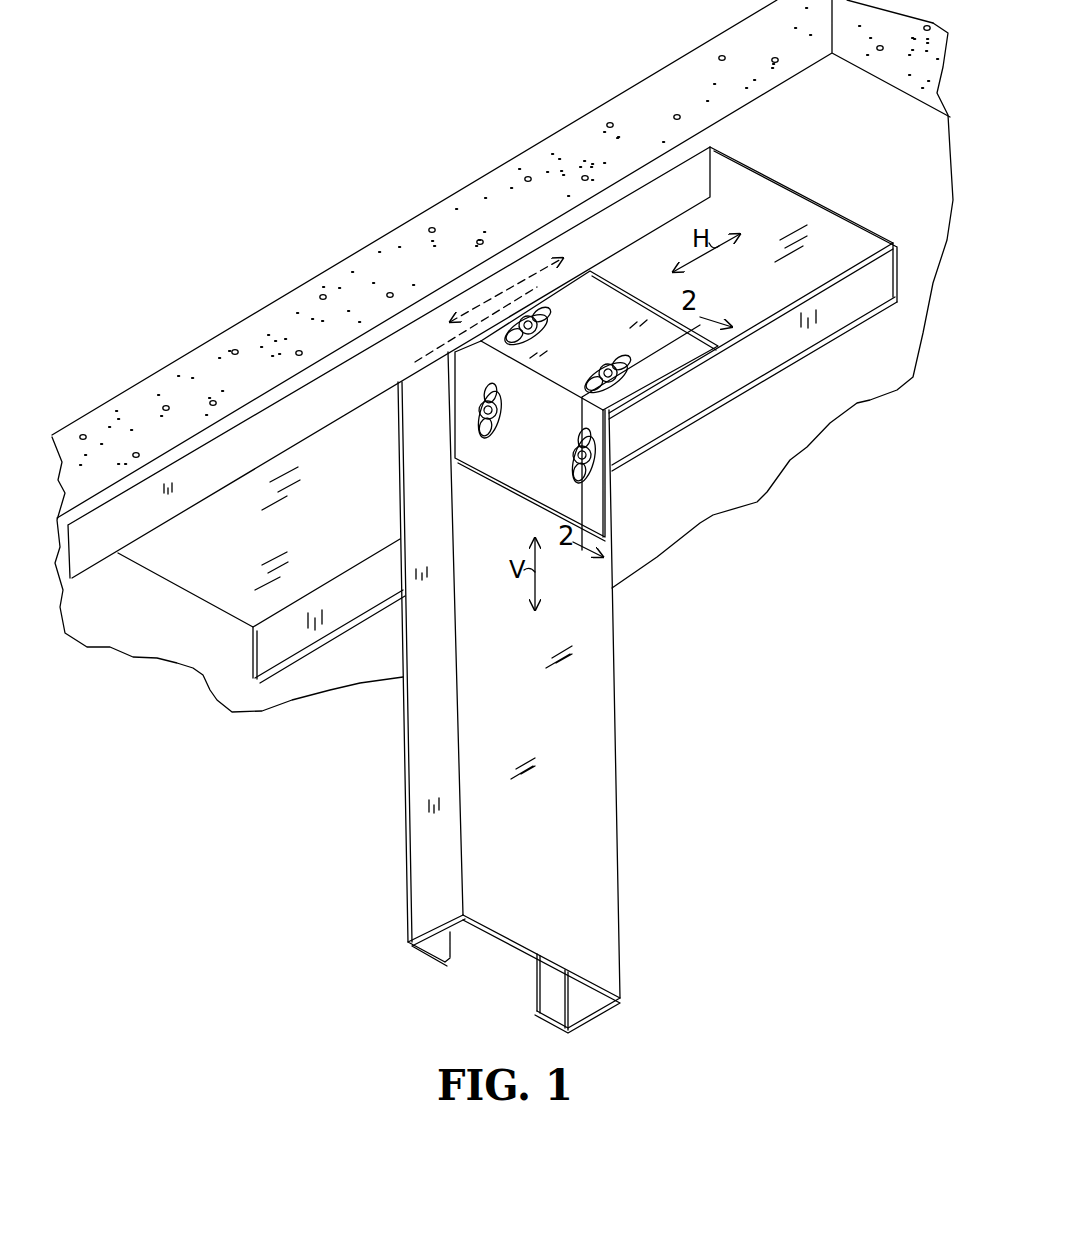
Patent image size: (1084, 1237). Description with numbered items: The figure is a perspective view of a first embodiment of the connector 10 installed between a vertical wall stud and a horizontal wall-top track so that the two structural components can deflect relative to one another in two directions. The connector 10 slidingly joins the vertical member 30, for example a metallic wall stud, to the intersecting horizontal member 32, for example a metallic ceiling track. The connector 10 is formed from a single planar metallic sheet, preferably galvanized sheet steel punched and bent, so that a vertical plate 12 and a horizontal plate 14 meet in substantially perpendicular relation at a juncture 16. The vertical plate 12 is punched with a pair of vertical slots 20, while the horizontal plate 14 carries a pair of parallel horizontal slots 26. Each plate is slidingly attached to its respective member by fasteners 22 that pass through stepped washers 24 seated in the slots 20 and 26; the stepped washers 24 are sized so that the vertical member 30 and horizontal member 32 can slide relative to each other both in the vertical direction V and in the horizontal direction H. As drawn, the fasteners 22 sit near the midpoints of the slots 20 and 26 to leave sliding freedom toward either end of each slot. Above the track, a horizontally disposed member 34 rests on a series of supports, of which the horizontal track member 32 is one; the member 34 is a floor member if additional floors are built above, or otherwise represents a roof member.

The connector 10 is at (586, 406).
The vertical plate 12 is at (538, 463).
The horizontal plate 14 is at (588, 347).
The juncture 16 is at (550, 383).
The vertical slots 20 is at (490, 443).
The fasteners 22 is at (473, 403).
The stepped washers 24 is at (483, 428).
The horizontal slots 26 is at (558, 306).
The vertical member 30 is at (617, 728).
The horizontal member 32 is at (838, 322).
The horizontally disposed member 34 is at (867, 149).